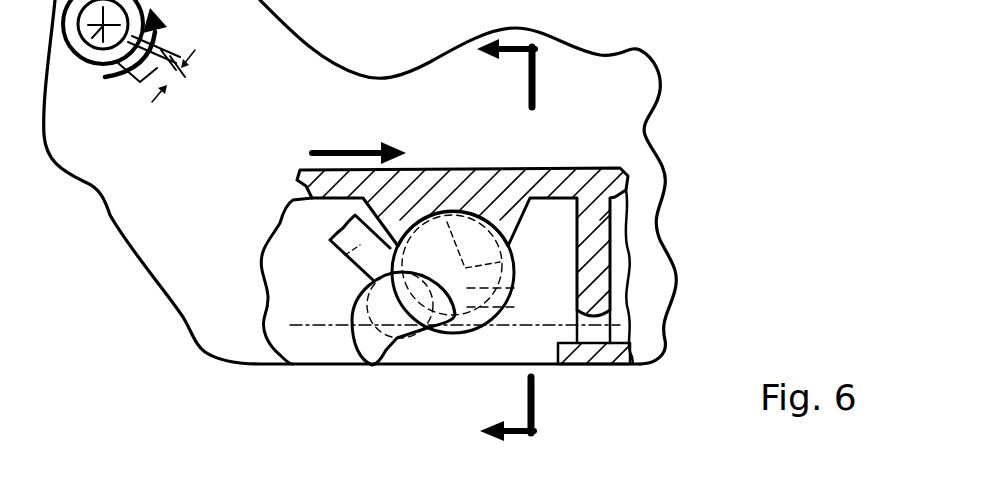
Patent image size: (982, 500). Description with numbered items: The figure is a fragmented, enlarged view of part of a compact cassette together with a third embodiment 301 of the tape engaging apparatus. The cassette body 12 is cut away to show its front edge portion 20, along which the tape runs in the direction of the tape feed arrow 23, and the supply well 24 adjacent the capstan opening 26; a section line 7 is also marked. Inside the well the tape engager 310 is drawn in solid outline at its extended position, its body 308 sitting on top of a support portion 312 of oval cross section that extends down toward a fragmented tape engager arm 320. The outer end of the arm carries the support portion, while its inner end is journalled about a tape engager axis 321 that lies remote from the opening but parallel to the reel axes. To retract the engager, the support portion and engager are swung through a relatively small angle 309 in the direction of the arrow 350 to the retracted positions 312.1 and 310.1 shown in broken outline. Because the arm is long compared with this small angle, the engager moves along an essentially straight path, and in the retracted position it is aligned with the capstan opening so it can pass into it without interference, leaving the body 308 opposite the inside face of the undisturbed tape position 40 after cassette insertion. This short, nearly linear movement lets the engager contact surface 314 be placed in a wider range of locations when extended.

The section line VII-VII 7 is at (517, 247).
The cassette body 12 is at (500, 165).
The front edge portion 20 is at (330, 374).
The tape feed arrow 23 is at (368, 138).
The supply well 24 is at (300, 231).
The capstan opening 26 is at (524, 257).
The undisturbed tape position 40 is at (542, 335).
The third embodiment 301 is at (476, 346).
The tape engager body 308 is at (411, 348).
The tape engager 310 is at (453, 274).
The retracted position of tape engager 310.1 is at (525, 309).
The support portion 312 is at (352, 307).
The retracted position of support portion 312.1 is at (525, 285).
The engager contact surface 314 is at (375, 358).
The tape engager arm 320 is at (352, 249).
The tape engager axis 321 is at (88, 50).
The arrow 350 is at (148, 36).
The angle 309 is at (168, 66).